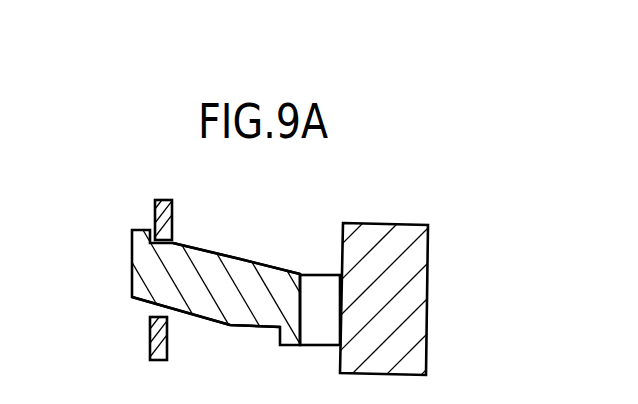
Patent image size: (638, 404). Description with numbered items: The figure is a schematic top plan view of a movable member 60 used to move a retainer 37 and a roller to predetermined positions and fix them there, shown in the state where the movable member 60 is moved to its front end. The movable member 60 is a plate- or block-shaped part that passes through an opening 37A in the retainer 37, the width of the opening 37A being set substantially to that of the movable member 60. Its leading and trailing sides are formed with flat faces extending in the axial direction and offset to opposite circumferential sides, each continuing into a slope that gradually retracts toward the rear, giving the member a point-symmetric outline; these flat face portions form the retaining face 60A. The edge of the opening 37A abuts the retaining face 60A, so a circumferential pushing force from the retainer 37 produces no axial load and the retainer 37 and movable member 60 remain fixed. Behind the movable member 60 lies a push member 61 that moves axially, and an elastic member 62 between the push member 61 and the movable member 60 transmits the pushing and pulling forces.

The movable member 60 is at (132, 278).
The retaining face 60A is at (180, 243).
The retainer 37 is at (158, 200).
The opening 37A is at (157, 317).
The elastic member 62 is at (315, 275).
The push member 61 is at (420, 292).